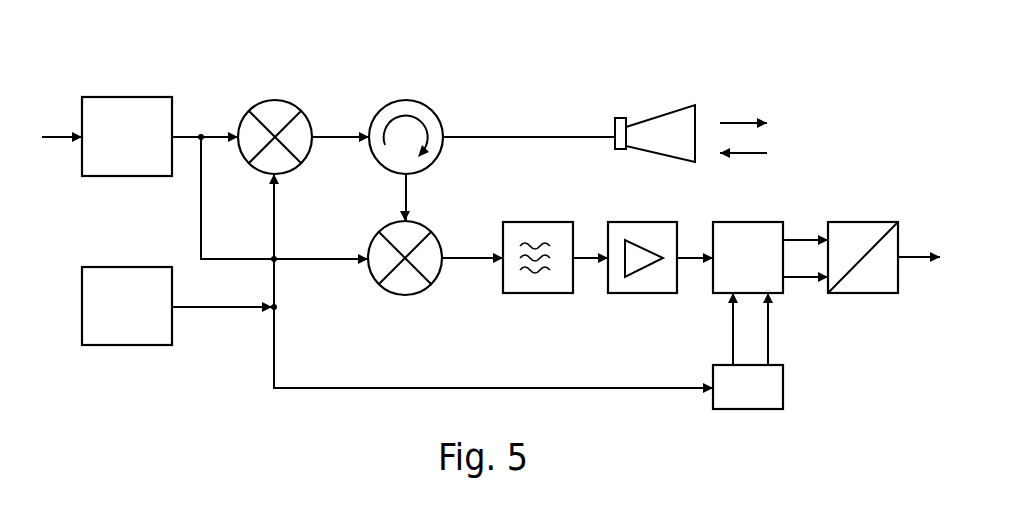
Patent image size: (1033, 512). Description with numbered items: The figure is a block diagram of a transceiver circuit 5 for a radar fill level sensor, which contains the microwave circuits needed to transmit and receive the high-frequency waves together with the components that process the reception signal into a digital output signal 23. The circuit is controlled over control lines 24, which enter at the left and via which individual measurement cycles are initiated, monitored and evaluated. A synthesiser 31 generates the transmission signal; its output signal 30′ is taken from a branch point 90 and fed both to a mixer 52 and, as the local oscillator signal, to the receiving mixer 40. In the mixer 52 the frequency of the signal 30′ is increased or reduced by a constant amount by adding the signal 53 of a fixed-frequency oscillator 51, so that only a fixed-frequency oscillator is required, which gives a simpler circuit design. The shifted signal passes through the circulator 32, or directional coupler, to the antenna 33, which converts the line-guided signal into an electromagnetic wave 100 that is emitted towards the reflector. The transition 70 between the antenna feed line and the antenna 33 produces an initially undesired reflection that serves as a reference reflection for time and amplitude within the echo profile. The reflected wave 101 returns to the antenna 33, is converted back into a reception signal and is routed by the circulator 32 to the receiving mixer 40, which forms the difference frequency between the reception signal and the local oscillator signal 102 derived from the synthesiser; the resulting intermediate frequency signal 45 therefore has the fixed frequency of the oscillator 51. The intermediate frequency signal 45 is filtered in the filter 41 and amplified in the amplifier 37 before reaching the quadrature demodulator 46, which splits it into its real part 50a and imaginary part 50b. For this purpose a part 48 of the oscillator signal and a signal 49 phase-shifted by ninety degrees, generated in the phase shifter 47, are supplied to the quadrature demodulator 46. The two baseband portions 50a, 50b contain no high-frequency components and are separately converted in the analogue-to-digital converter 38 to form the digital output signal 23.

The transceiver circuit 5 is at (506, 66).
The control lines 24 is at (62, 134).
The synthesiser 31 is at (120, 96).
The branching point 90 is at (201, 134).
The output signal of the synthesiser 30′ is at (235, 134).
The mixer 52 is at (272, 100).
The circulator 32 is at (395, 100).
The transition from antenna feed line to antenna 70 is at (614, 128).
The antenna 33 is at (652, 118).
The electromagnetic wave 100 is at (737, 121).
The reflected wave 101 is at (408, 194).
The receiving mixer 40 is at (383, 228).
The local oscillator mixed signal 102 is at (330, 262).
The intermediate frequency signal 45 is at (478, 262).
The filter 41 is at (540, 220).
The amplifier 37 is at (628, 220).
The quadrature demodulator 46 is at (722, 220).
The real part 50a is at (797, 237).
The imaginary part 50b is at (800, 282).
The analog-to-digital converter 38 is at (855, 220).
The output signal 23 is at (905, 255).
The fixed-frequency oscillator 51 is at (120, 266).
The local oscillator signal 53 is at (273, 327).
The phase shifter 47 is at (783, 392).
The part of the oscillator output signal 48 is at (733, 343).
The phase-shifted signal 49 is at (768, 343).